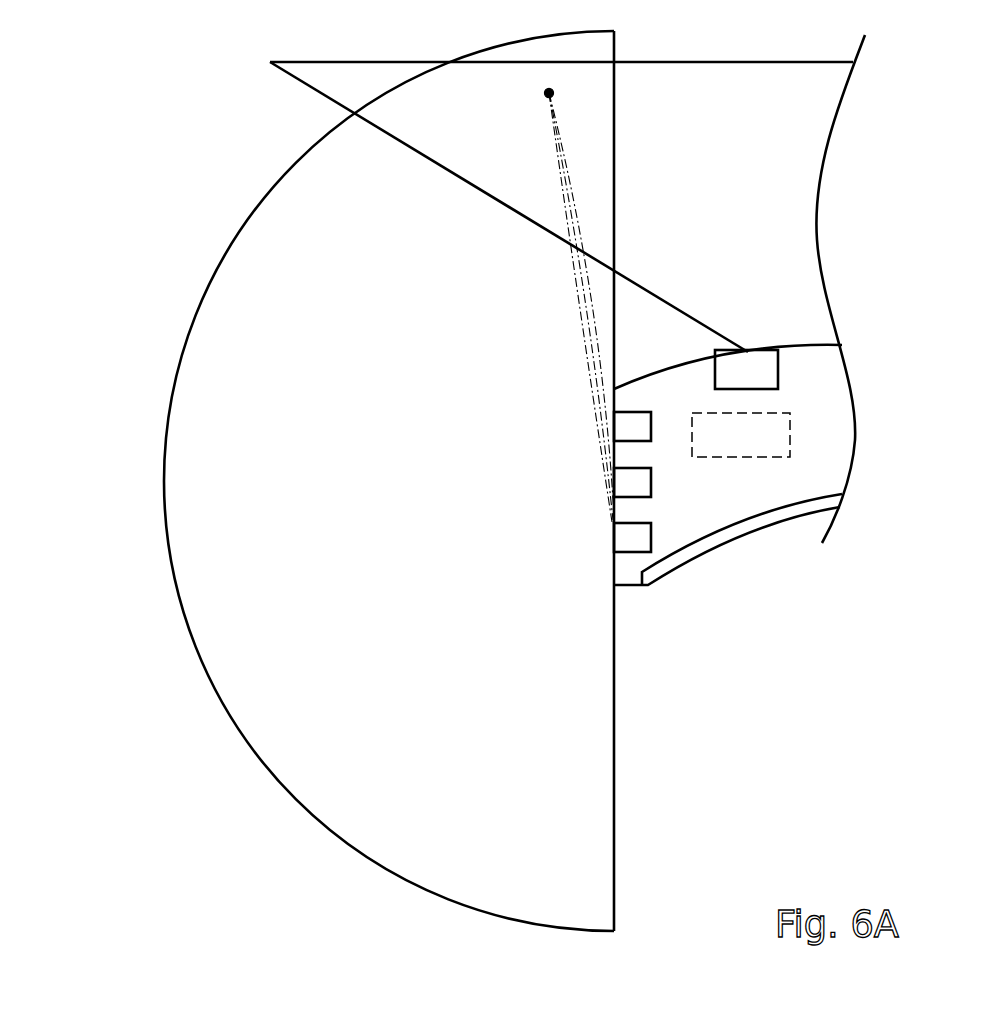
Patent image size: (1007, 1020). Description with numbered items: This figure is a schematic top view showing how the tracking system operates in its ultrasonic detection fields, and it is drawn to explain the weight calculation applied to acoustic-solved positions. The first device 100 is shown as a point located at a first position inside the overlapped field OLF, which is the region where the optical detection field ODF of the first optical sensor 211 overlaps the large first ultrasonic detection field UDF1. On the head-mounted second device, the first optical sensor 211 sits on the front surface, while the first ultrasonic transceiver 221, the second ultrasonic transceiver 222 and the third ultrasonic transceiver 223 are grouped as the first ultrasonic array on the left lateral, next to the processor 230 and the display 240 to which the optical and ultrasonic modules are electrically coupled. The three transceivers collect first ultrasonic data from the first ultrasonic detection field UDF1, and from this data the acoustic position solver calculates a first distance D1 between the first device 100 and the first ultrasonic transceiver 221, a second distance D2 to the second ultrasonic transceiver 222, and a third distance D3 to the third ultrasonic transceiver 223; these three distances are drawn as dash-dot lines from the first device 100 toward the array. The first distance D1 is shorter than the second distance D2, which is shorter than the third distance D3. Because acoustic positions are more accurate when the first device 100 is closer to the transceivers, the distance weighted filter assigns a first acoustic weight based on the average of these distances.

The first device 100 is at (549, 93).
The overlapped field OLF is at (423, 120).
The optical detection field ODF is at (795, 163).
The first ultrasonic detection field UDF1 is at (238, 322).
The first distance D1 is at (593, 315).
The second distance D2 is at (592, 342).
The third distance D3 is at (590, 375).
The first optical sensor 211 is at (778, 368).
The first ultrasonic transceiver 221 is at (652, 426).
The second ultrasonic transceiver 222 is at (651, 482).
The third ultrasonic transceiver 223 is at (651, 538).
The processor 230 is at (790, 433).
The display 240 is at (822, 503).